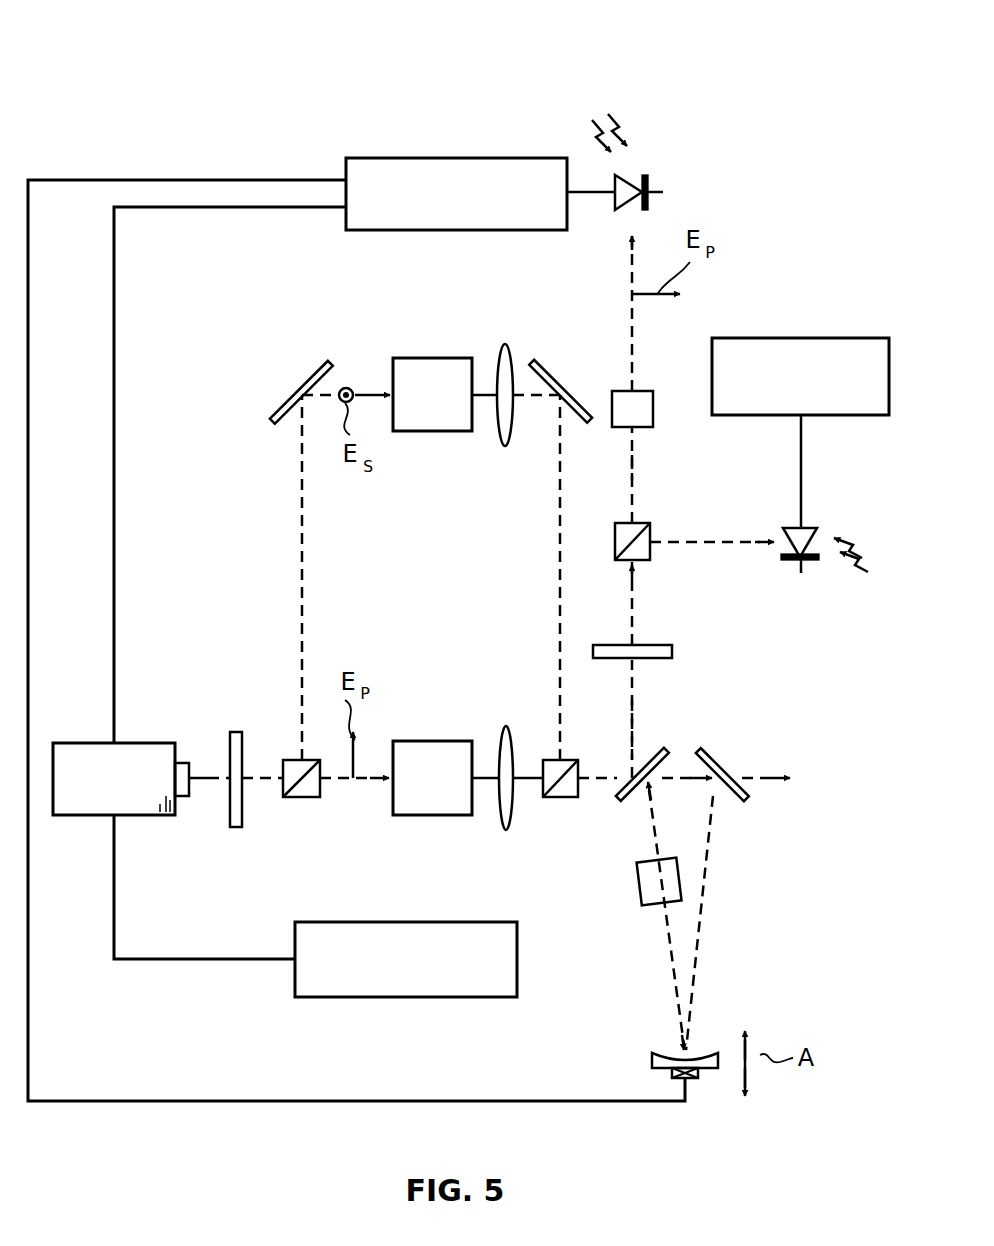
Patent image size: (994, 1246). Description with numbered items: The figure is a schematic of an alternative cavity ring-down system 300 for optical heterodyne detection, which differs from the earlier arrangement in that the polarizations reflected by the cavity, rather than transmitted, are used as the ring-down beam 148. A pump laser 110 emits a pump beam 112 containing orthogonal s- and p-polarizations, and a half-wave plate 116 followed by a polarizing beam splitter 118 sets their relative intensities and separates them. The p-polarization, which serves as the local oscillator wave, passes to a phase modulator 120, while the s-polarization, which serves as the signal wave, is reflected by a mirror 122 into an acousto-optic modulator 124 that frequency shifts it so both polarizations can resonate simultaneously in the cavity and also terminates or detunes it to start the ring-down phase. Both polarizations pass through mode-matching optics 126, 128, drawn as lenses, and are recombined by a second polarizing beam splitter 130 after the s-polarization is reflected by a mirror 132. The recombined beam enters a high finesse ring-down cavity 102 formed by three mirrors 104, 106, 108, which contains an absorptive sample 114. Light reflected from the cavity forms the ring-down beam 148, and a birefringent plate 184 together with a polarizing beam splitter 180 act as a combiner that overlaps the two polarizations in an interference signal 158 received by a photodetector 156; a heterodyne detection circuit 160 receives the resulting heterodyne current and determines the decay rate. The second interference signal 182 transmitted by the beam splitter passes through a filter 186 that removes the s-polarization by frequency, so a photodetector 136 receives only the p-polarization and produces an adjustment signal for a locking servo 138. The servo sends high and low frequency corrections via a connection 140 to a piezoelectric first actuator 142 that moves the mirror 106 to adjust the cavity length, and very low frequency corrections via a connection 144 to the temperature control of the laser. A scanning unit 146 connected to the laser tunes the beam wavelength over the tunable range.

The cavity ring-down system 300 is at (212, 68).
The ring-down cavity 102 is at (762, 929).
The mirror 104 is at (628, 800).
The mirror 106 is at (662, 1052).
The mirror 108 is at (718, 752).
The pump laser 110 is at (155, 743).
The pump beam 112 is at (290, 760).
The absorptive sample 114 is at (638, 888).
The half-wave plate 116 is at (236, 827).
The polarizing beam splitter 118 is at (302, 797).
The phase modulator 120 is at (455, 741).
The mirror 122 is at (305, 380).
The acousto-optic modulator 124 is at (418, 432).
The mode-matching optics 126 is at (500, 440).
The mode-matching optics 128 is at (512, 735).
The polarizing beam splitter 130 is at (550, 797).
The mirror 132 is at (540, 355).
The photodetector 136 is at (655, 180).
The locking servo 138 is at (425, 158).
The connection 140 is at (329, 1100).
The first actuator 142 is at (668, 1073).
The connection 144 is at (115, 385).
The scanning unit 146 is at (375, 922).
The ring-down beam 148 is at (634, 733).
The photodetector 156 is at (806, 568).
The interference signal 158 is at (722, 540).
The heterodyne detection circuit 160 is at (828, 418).
The polarizing beam splitter 180 is at (650, 535).
The second interference signal 182 is at (634, 470).
The birefringent plate 184 is at (672, 650).
The filter 186 is at (612, 391).